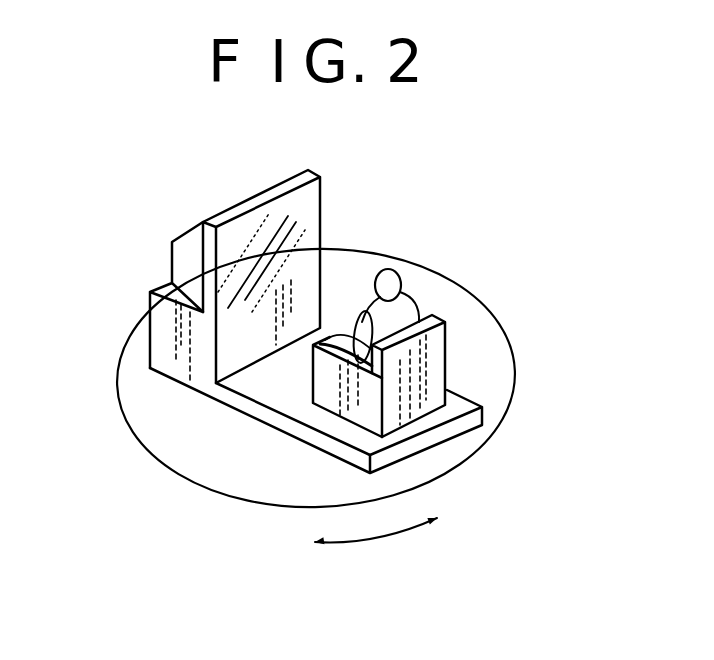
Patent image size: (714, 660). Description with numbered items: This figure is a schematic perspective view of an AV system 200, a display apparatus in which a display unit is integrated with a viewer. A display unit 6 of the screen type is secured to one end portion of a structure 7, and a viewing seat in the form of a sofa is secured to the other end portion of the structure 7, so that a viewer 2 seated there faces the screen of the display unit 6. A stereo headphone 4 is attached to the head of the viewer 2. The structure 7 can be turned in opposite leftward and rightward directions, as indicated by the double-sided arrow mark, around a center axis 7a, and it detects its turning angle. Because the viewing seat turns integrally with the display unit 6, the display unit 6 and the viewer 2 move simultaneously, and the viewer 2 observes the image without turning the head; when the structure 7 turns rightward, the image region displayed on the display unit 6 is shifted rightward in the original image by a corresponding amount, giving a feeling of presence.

The AV system 200 is at (517, 318).
The viewer 2 is at (415, 293).
The stereo headphone 4 is at (378, 290).
The display unit 6 is at (326, 211).
The structure 7 is at (273, 418).
The center axis 7a is at (270, 382).